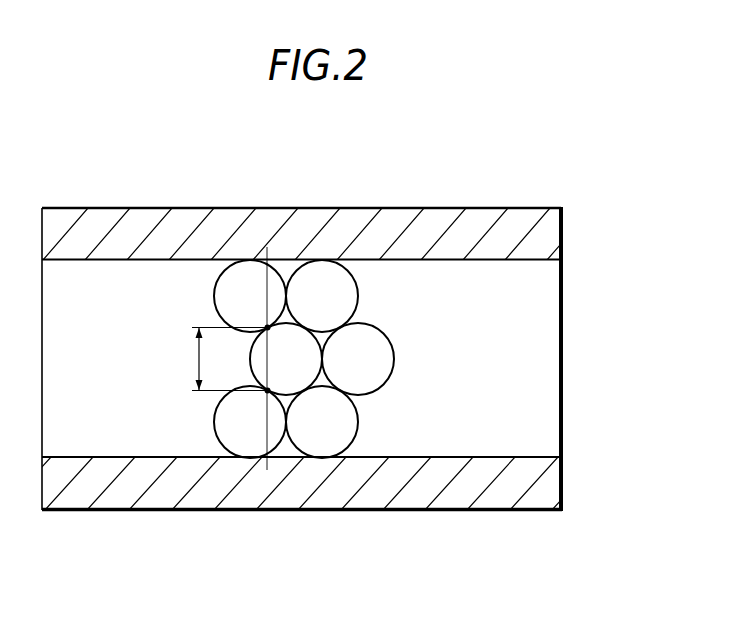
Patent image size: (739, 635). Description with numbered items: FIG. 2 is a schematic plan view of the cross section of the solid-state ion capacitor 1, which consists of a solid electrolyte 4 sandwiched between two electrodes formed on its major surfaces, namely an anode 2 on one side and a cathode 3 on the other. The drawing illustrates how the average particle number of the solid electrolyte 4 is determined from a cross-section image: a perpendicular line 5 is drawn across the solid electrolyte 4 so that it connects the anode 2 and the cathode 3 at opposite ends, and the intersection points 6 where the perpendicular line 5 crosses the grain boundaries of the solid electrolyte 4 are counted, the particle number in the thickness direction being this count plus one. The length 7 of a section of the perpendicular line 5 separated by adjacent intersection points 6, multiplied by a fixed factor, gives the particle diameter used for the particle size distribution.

The solid-state ion capacitor 1 is at (370, 208).
The anode 2 is at (540, 237).
The cathode 3 is at (505, 487).
The solid electrolyte 4 is at (507, 372).
The perpendicular line 5 is at (267, 391).
The intersection points 6 is at (269, 328).
The length of the section 7 is at (198, 355).